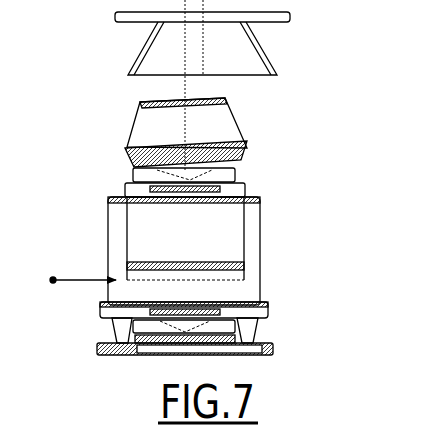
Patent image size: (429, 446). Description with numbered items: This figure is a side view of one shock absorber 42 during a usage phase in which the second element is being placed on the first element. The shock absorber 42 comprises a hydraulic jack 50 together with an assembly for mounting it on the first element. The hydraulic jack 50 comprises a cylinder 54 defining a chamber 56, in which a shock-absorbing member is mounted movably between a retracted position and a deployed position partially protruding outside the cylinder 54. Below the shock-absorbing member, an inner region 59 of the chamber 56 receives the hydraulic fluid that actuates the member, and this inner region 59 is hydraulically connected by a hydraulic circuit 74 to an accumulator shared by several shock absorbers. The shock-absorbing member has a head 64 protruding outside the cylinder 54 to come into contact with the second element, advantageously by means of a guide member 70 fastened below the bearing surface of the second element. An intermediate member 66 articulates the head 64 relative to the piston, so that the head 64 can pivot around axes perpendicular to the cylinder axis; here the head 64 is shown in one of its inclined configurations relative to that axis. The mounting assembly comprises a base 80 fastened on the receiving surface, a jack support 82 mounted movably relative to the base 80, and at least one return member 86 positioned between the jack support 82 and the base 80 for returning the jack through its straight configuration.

The shock absorber 42 is at (290, 121).
The hydraulic jack 50 is at (299, 277).
The cylinder 54 is at (252, 248).
The chamber 56 is at (240, 229).
The inner region 59 is at (237, 275).
The head 64 is at (138, 132).
The intermediate member 66 is at (135, 158).
The guide member 70 is at (253, 57).
The hydraulic circuit 74 is at (53, 280).
The base 80 is at (268, 355).
The jack support 82 is at (102, 315).
The return member 86 is at (252, 327).